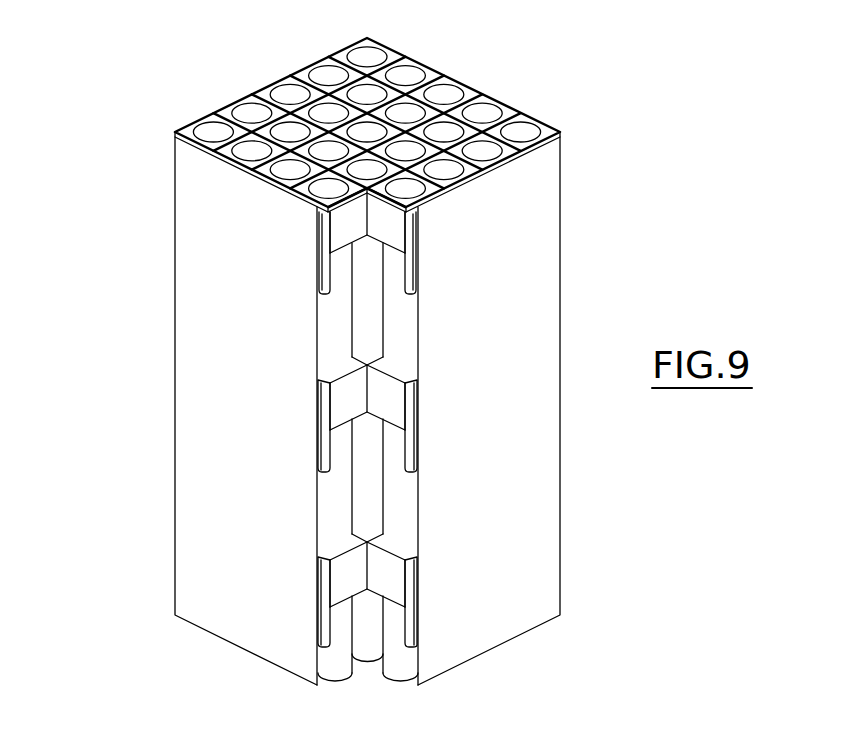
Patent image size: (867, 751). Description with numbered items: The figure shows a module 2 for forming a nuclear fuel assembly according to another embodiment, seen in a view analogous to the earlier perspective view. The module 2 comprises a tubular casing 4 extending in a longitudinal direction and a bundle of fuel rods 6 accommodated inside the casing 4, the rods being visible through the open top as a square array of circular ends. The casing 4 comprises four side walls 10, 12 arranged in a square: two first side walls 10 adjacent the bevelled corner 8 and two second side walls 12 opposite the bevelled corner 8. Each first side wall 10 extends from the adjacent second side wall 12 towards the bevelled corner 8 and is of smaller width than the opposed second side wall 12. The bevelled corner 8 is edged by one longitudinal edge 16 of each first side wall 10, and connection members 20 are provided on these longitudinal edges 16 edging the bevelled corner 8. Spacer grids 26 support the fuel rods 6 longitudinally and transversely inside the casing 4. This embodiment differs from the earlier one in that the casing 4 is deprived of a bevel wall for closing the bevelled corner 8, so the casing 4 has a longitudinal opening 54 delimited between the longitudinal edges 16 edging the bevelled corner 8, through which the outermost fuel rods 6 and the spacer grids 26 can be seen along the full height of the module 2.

The module 2 is at (100, 115).
The tubular casing 4 is at (173, 162).
The fuel rods 6 is at (517, 135).
The bevelled corner 8 is at (400, 490).
The first side walls 10 is at (180, 258).
The second side walls 12 is at (267, 83).
The longitudinal edge 16 is at (317, 352).
The connection members 20 is at (305, 250).
The spacer grids 26 is at (352, 228).
The longitudinal opening 54 is at (368, 312).